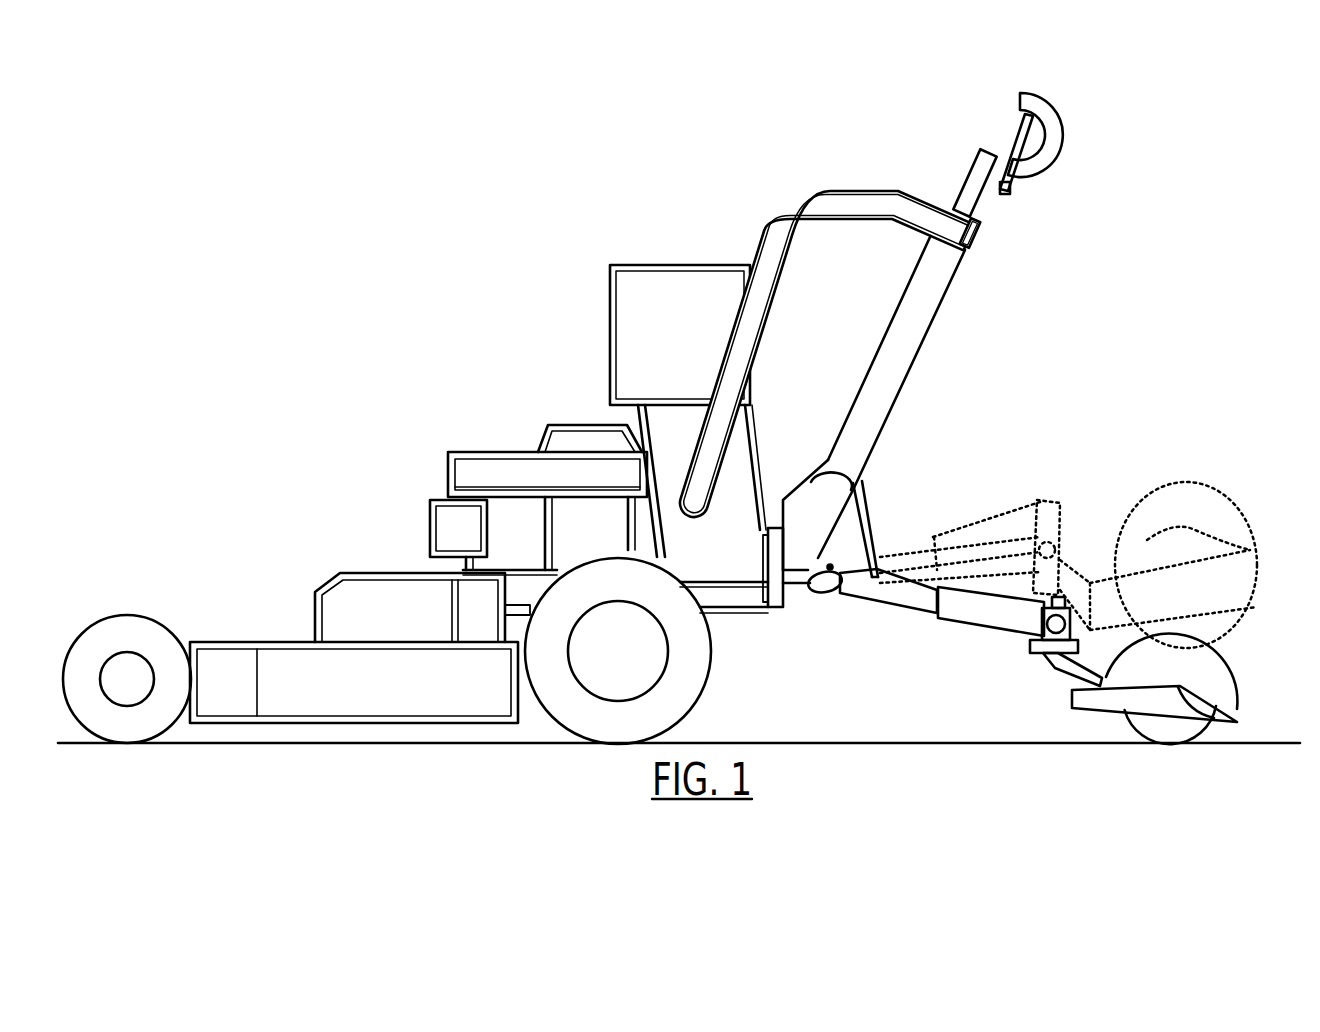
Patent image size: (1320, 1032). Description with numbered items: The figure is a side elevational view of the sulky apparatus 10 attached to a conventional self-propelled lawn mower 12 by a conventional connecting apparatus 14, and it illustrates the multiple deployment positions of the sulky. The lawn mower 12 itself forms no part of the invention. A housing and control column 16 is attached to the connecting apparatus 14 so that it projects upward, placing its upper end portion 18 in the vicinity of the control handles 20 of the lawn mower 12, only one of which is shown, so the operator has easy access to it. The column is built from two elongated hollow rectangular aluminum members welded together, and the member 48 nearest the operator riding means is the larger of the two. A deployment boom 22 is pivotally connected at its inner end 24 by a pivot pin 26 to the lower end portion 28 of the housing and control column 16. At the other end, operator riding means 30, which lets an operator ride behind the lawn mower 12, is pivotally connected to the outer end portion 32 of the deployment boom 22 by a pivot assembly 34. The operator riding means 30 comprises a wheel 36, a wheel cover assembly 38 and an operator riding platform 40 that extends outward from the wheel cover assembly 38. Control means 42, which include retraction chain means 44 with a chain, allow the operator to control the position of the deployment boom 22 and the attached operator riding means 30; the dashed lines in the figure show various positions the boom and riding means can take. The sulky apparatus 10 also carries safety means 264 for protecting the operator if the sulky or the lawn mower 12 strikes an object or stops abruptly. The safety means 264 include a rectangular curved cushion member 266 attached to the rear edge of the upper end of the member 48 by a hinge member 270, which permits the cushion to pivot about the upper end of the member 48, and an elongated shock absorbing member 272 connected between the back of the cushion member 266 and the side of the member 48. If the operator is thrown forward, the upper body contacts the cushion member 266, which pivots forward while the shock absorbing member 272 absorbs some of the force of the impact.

The sulky apparatus 10 is at (1070, 290).
The self-propelled lawn mower 12 is at (538, 403).
The connecting apparatus 14 is at (777, 597).
The housing and control column 16 is at (902, 366).
The upper end portion 18 is at (977, 175).
The control handles 20 is at (913, 212).
The deployment boom 22 is at (937, 617).
The inner end 24 is at (830, 592).
The pivot pin 26 is at (820, 583).
The lower end portion 28 is at (862, 505).
The operator riding means 30 is at (1207, 483).
The outer end portion 32 is at (1040, 613).
The pivot assembly 34 is at (1038, 653).
The wheel 36 is at (1127, 727).
The wheel cover assembly 38 is at (1233, 668).
The operator riding platform 40 is at (1178, 678).
The control means 42 is at (880, 523).
The retraction chain means 44 is at (880, 540).
The elongated hollow rectangular cross section aluminum member 48 is at (945, 277).
The safety means 264 is at (1070, 145).
The curved cushion member 266 is at (1050, 110).
The hinge member 270 is at (1010, 190).
The shock absorbing member 272 is at (1002, 160).